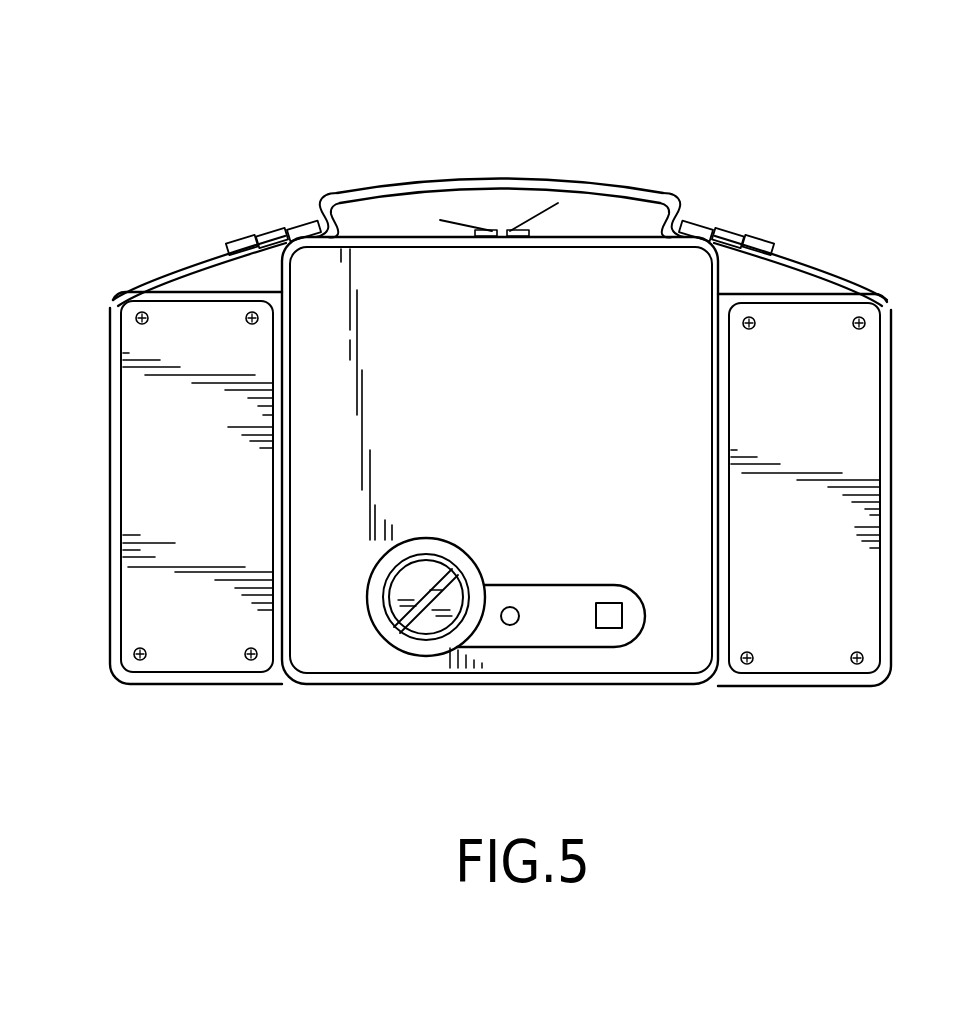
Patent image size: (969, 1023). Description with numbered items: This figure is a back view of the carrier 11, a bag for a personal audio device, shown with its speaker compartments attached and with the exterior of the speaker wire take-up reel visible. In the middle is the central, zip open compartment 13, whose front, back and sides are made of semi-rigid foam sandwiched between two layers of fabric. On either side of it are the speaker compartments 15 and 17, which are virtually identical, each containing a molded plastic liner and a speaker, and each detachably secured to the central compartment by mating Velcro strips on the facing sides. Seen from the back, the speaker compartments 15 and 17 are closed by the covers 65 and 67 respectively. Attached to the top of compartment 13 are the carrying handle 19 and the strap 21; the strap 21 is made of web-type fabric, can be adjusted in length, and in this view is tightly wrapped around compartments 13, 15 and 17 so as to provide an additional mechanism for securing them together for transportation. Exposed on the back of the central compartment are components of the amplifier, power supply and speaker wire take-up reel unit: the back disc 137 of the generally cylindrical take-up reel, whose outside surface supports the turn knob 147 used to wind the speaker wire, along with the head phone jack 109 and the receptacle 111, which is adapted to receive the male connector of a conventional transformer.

The carrier 11 is at (752, 117).
The central, zip open compartment 13 is at (572, 660).
The speaker compartment 15 is at (130, 585).
The speaker compartment 17 is at (828, 671).
The carrying handle 19 is at (514, 182).
The strap 21 is at (172, 262).
The cover 65 is at (192, 460).
The cover 67 is at (812, 397).
The head phone jack 109 is at (513, 606).
The receptacle 111 is at (608, 602).
The back disc 137 is at (424, 620).
The turn knob 147 is at (440, 578).